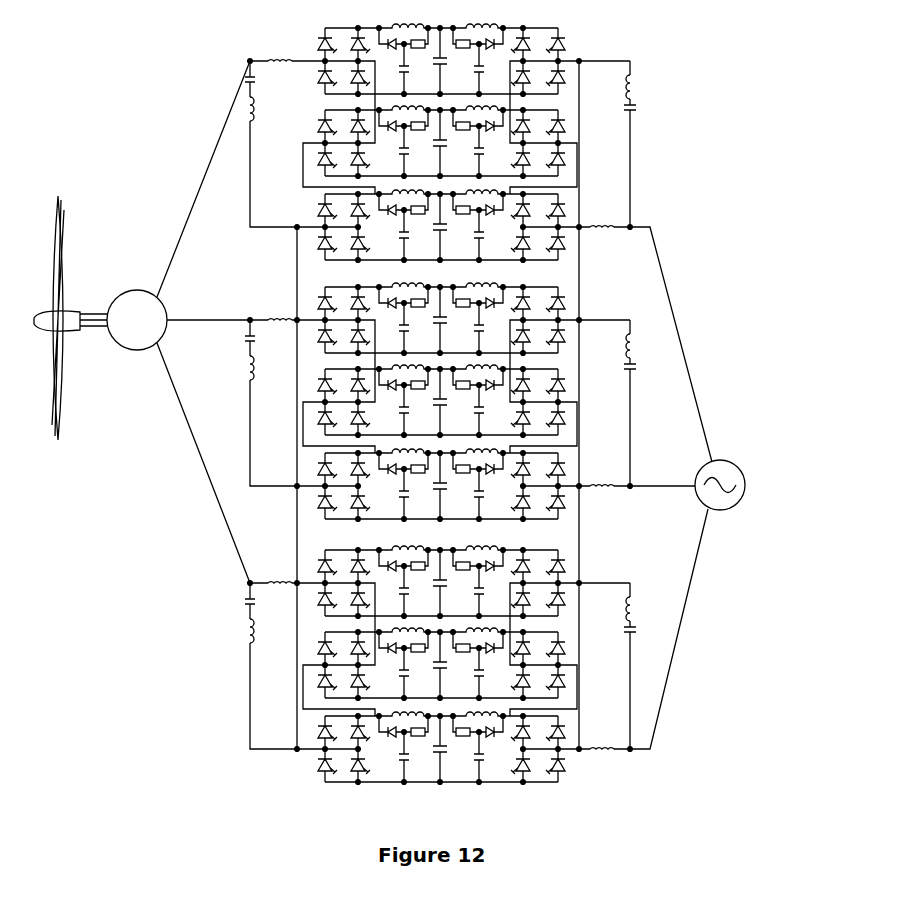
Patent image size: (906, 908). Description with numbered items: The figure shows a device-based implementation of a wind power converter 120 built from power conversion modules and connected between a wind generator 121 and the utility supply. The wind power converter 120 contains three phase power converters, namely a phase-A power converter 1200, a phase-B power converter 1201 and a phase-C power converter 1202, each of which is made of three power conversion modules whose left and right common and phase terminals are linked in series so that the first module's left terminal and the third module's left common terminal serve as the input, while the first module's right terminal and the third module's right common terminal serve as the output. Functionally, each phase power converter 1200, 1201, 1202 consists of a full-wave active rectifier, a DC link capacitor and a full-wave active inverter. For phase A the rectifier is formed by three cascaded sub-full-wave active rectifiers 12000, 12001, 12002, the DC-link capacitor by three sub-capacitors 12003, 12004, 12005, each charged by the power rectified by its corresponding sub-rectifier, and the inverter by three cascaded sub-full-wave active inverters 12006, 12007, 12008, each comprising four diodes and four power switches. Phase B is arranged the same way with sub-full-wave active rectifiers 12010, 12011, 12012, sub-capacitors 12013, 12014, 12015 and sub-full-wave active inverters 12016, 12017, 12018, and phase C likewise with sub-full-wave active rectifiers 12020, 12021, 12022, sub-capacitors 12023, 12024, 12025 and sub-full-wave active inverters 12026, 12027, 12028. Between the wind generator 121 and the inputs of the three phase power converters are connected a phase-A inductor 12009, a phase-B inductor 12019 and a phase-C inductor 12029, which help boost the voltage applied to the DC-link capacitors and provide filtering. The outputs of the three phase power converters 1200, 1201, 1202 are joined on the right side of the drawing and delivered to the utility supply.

The wind power converter 120 is at (464, 424).
The wind generator 121 is at (100, 318).
The phase-A power converter 1200 is at (650, 145).
The phase-B power converter 1201 is at (649, 404).
The phase-C power converter 1202 is at (649, 667).
The sub-full-wave active rectifier 12000 is at (344, 54).
The sub-full-wave active rectifier 12001 is at (344, 136).
The sub-full-wave active rectifier 12002 is at (344, 220).
The sub-capacitor 12003 is at (440, 54).
The sub-capacitor 12004 is at (440, 136).
The sub-capacitor 12005 is at (440, 220).
The sub-full-wave active inverter 12006 is at (538, 54).
The sub-full-wave active inverter 12007 is at (538, 136).
The sub-full-wave active inverter 12008 is at (538, 220).
The phase-A inductor 12009 is at (275, 50).
The sub-full-wave active rectifier 12010 is at (344, 313).
The sub-full-wave active rectifier 12011 is at (344, 395).
The sub-full-wave active rectifier 12012 is at (344, 479).
The sub-capacitor 12013 is at (440, 313).
The sub-capacitor 12014 is at (440, 395).
The sub-capacitor 12015 is at (440, 479).
The sub-full-wave active inverter 12016 is at (538, 313).
The sub-full-wave active inverter 12017 is at (538, 395).
The sub-full-wave active inverter 12018 is at (538, 479).
The phase-B inductor 12019 is at (275, 309).
The sub-full-wave active rectifier 12020 is at (344, 576).
The sub-full-wave active rectifier 12021 is at (344, 658).
The sub-full-wave active rectifier 12022 is at (344, 742).
The sub-capacitor 12023 is at (440, 576).
The sub-capacitor 12024 is at (440, 658).
The sub-capacitor 12025 is at (440, 742).
The sub-full-wave active inverter 12026 is at (538, 576).
The sub-full-wave active inverter 12027 is at (538, 658).
The sub-full-wave active inverter 12028 is at (538, 742).
The phase-C inductor 12029 is at (275, 572).